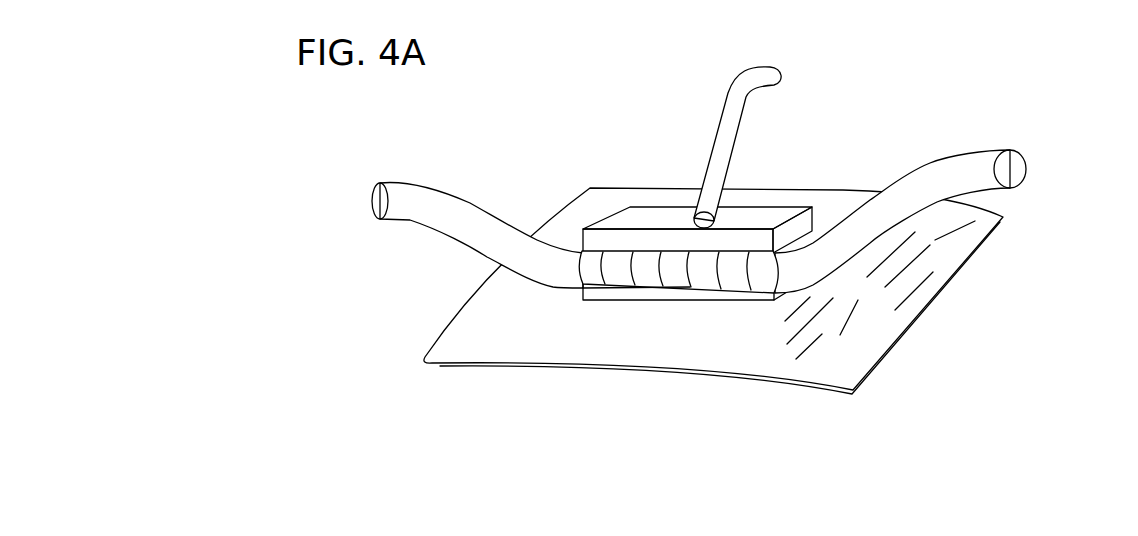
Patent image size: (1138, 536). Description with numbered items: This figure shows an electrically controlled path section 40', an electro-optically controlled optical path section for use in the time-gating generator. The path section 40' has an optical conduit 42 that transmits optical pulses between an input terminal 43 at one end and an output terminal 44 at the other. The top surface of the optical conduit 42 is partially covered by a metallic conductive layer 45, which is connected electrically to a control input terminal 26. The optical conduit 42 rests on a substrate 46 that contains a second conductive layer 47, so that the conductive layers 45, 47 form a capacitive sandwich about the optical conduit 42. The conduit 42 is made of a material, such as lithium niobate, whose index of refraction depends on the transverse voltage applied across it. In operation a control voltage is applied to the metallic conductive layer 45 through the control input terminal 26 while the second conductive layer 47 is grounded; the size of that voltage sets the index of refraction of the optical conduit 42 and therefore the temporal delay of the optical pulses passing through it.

The control input terminal 26 is at (723, 100).
The electrically controlled path section 40' is at (922, 78).
The optical conduit 42 is at (703, 273).
The input terminal 43 is at (372, 210).
The output terminal 44 is at (1013, 168).
The metallic conductive layer 45 is at (645, 222).
The substrate 46 is at (550, 331).
The second conductive layer 47 is at (683, 290).